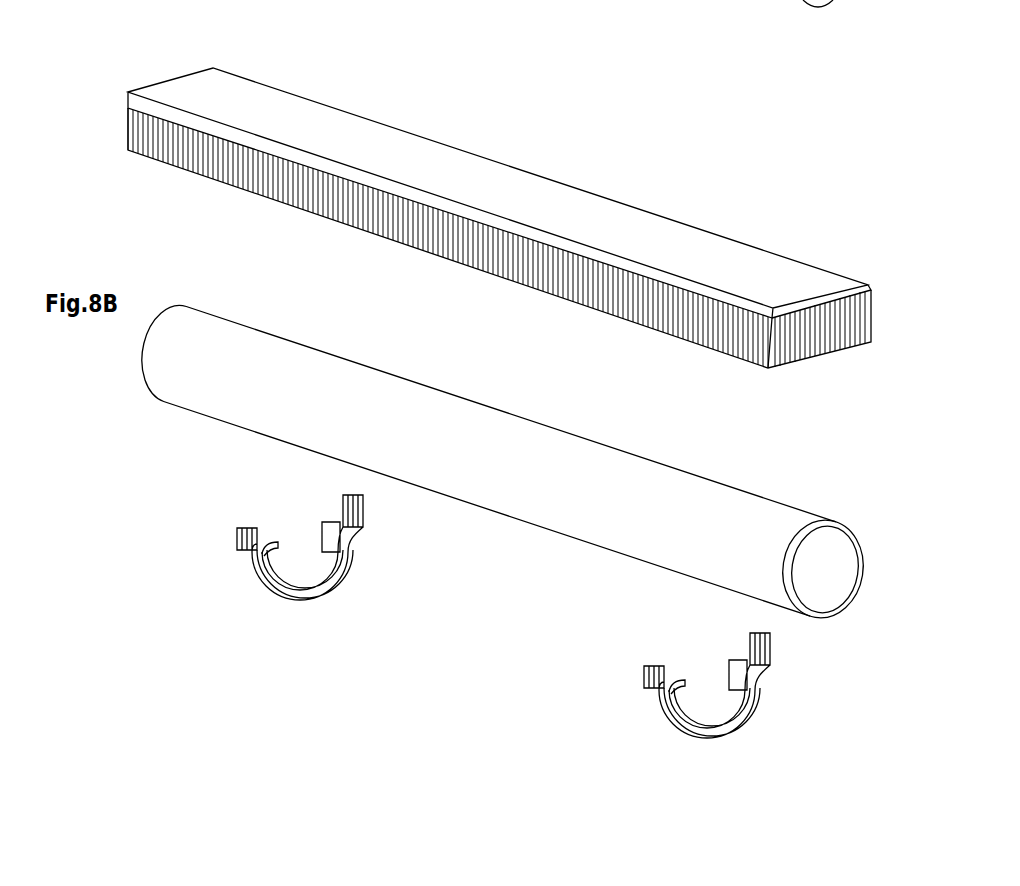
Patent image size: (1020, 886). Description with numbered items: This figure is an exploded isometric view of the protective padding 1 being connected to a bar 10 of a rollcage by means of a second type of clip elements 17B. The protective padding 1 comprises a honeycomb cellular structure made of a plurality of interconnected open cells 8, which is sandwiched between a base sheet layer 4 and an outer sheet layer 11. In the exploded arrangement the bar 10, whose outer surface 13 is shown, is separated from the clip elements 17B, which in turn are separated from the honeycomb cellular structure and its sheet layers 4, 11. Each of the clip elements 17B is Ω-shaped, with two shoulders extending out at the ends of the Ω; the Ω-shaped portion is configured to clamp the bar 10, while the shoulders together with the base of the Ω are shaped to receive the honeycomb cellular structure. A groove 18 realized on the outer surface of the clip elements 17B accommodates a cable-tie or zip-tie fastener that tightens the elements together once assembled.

The protective padding 1 is at (703, 209).
The outer sheet layer 11 is at (243, 105).
The base sheet layer 4 is at (207, 177).
The interconnected open cells 8 is at (203, 152).
The bar 10 is at (152, 418).
The outer surface 13 is at (550, 476).
The clip elements 17B is at (728, 670).
The groove 18 is at (240, 532).